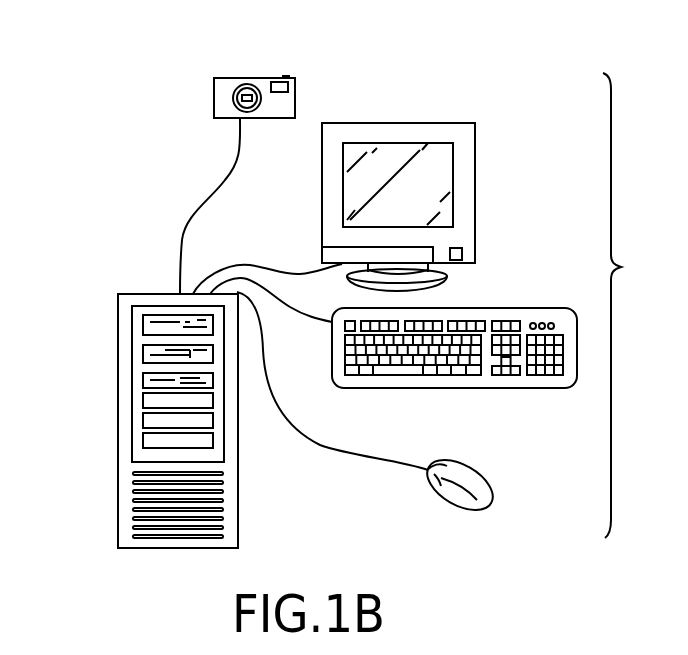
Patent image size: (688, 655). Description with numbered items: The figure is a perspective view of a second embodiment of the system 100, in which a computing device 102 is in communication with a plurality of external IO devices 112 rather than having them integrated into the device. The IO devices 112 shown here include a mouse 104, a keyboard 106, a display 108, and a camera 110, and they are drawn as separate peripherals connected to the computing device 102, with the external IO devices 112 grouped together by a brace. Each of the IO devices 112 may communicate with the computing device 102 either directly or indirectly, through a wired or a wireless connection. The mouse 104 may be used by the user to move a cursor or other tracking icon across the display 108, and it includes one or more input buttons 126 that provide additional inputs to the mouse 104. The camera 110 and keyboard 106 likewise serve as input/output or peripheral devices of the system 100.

The system 100 is at (90, 276).
The computing device 102 is at (118, 418).
The mouse 104 is at (462, 495).
The keyboard 106 is at (538, 308).
The display 108 is at (357, 122).
The camera 110 is at (243, 77).
The external IO devices 112 is at (632, 305).
The input buttons 126 is at (445, 462).